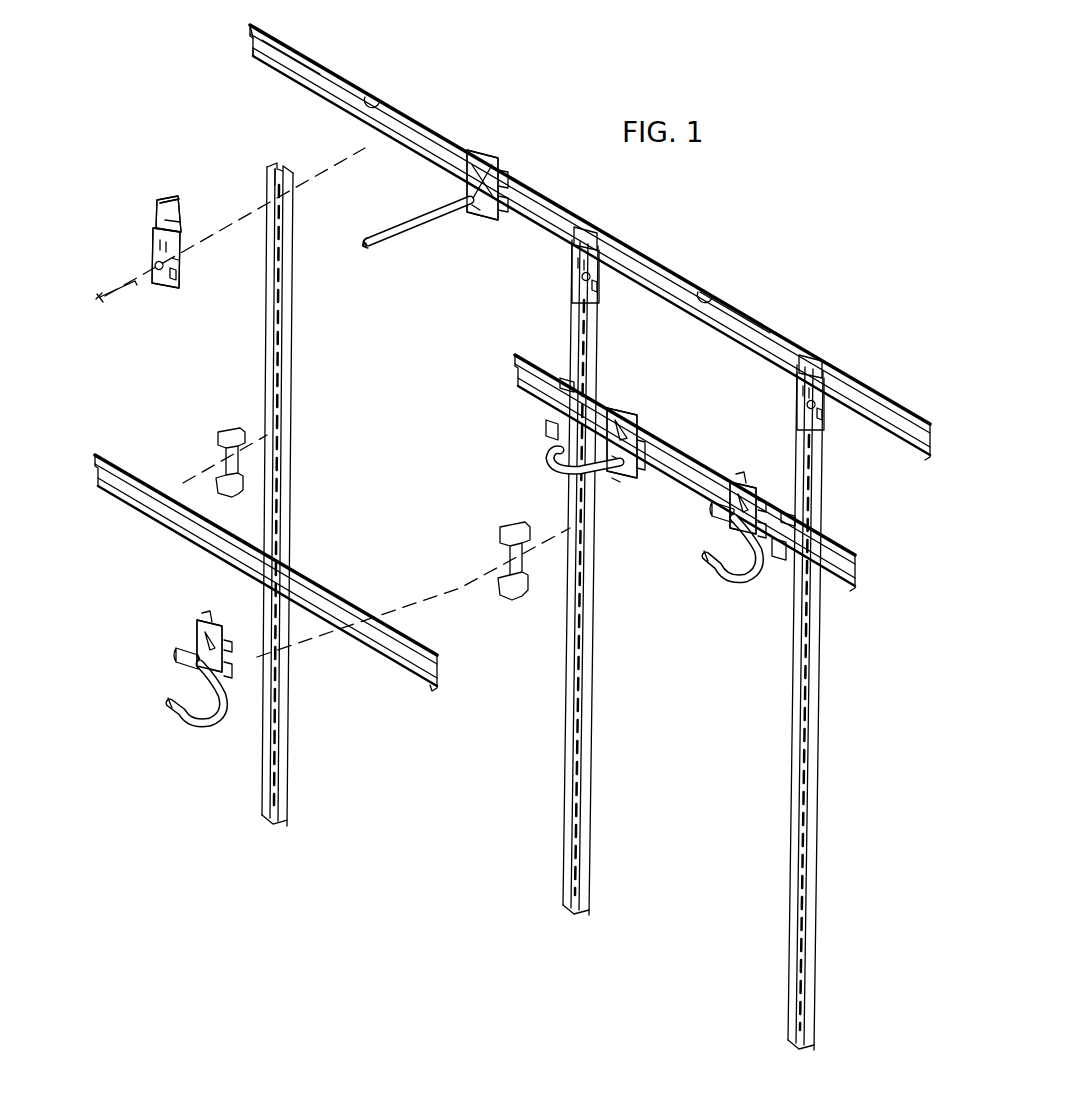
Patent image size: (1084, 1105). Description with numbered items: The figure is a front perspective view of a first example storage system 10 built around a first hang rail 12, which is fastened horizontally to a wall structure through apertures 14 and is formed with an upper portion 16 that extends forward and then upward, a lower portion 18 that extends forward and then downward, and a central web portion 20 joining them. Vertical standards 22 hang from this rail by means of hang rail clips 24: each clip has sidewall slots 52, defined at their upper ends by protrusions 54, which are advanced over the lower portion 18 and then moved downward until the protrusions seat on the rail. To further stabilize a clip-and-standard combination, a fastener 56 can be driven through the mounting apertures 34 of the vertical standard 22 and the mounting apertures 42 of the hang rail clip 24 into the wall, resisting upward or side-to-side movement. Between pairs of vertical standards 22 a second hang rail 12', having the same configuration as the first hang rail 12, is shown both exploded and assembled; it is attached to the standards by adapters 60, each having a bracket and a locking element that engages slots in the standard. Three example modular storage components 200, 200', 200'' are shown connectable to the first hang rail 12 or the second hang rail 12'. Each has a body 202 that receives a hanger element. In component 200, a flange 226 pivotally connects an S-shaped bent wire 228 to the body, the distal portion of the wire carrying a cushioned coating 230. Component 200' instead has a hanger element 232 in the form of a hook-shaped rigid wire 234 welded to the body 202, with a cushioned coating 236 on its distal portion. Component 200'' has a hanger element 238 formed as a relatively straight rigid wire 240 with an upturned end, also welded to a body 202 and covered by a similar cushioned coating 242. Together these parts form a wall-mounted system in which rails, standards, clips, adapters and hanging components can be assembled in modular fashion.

The storage system 10 is at (794, 179).
The first hang rail 12 is at (590, 242).
The second hang rail 12' is at (475, 523).
The apertures 14 is at (387, 97).
The upper portion 16 is at (250, 27).
The lower portion 18 is at (250, 52).
The central web portion 20 is at (297, 66).
The vertical standards 22 is at (287, 770).
The hang rail clips 24 is at (158, 194).
The mounting apertures 34 is at (294, 196).
The mounting apertures 42 is at (155, 258).
The slots 52 is at (183, 232).
The protrusions 54 is at (183, 222).
The fastener 56 is at (122, 296).
The adapter 60 is at (229, 422).
The modular storage component 200 is at (444, 643).
The modular storage component 200' is at (633, 405).
The modular storage component 200'' is at (489, 215).
The body 202 is at (226, 648).
The flange 226 is at (208, 655).
The S-shaped bent wire 228 is at (178, 658).
The cushioned coating 230 is at (220, 727).
The hanger element 232 is at (618, 503).
The hook-shaped rigid wire 234 is at (648, 446).
The cushioned coating 236 is at (546, 463).
The hanger element 238 is at (426, 246).
The rigid wire 240 is at (515, 190).
The cushioned coating 242 is at (392, 244).